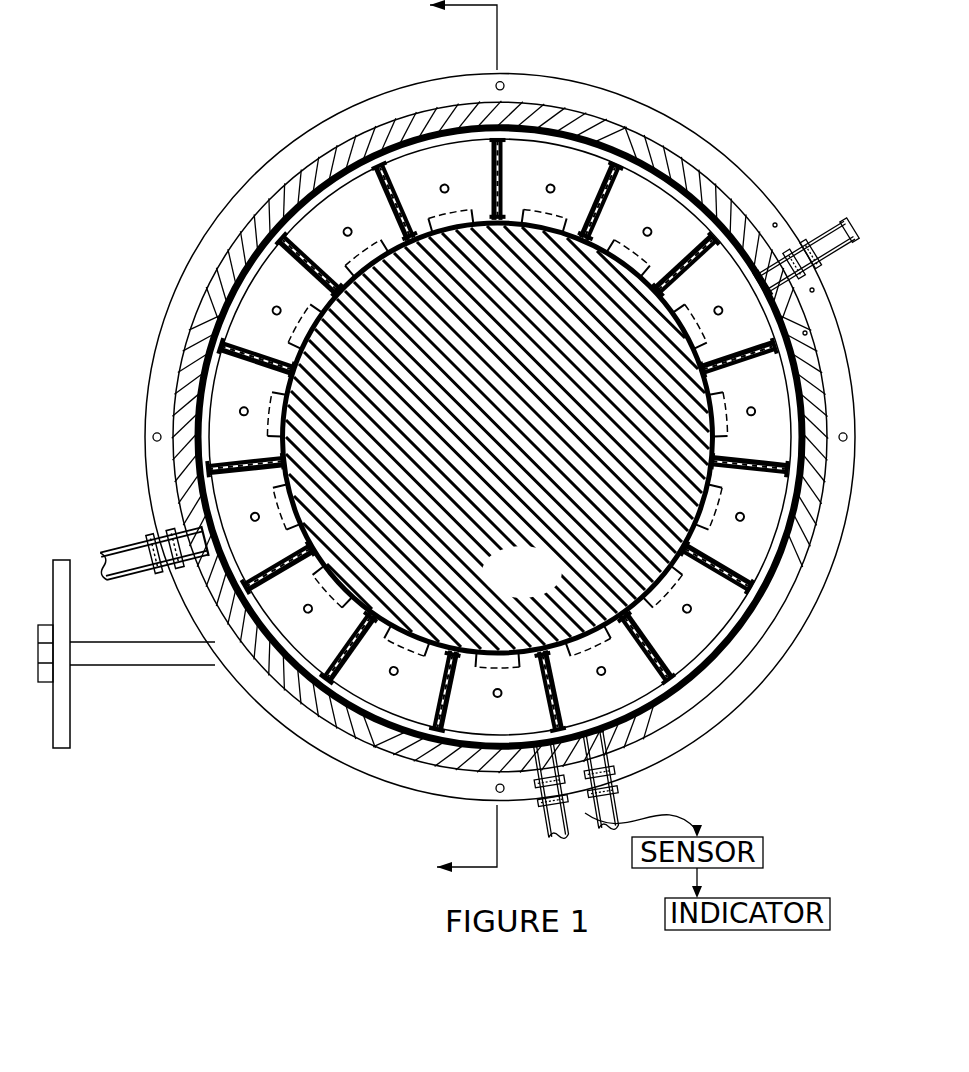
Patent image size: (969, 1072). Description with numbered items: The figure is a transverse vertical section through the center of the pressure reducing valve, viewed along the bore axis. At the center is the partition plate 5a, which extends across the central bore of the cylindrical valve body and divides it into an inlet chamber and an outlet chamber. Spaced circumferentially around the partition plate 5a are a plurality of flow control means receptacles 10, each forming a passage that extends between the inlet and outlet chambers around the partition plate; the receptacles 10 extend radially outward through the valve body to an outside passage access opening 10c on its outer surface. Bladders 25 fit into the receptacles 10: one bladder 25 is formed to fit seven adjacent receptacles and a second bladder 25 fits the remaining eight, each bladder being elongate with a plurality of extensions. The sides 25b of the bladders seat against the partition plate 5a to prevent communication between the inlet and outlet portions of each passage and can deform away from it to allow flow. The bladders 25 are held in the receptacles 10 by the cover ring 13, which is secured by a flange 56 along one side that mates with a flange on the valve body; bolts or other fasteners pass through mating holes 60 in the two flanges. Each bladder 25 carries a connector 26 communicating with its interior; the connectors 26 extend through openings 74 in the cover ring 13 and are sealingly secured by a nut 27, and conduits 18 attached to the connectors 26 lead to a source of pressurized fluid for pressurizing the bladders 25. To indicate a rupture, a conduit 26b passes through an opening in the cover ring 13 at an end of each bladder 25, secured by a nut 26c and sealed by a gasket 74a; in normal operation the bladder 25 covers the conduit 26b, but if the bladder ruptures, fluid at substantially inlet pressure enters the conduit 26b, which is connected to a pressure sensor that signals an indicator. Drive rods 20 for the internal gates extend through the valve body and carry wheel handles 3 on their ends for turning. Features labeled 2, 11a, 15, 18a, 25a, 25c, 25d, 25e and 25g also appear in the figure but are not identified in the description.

The section line 2- 2 is at (451, 442).
The wheel handle 3 is at (70, 733).
The partition plate 5a is at (540, 585).
The flow control means receptacle 10 is at (383, 693).
The outside passage access opening 10c is at (208, 418).
The winding segment 11a is at (698, 616).
The cover ring 13 is at (398, 112).
The hub pad 15 is at (453, 216).
The conduit 18 is at (858, 222).
The coolant outlet pipe 18a is at (568, 826).
The drive rod 20 is at (115, 655).
The bladder 25 is at (648, 152).
The segment cell 25a is at (503, 174).
The bladder side 25b is at (613, 238).
The segment cell 25c is at (712, 395).
The segment cell 25d is at (775, 225).
The segment cell 25e is at (812, 290).
The segment cell 25g is at (805, 333).
The connector 26 is at (768, 295).
The conduit 26b is at (540, 805).
The nut 26c is at (643, 808).
The nut 27 is at (782, 238).
The flange 56 is at (346, 108).
The mating hole 60 is at (505, 89).
The opening 74 is at (252, 563).
The gasket 74a is at (505, 748).